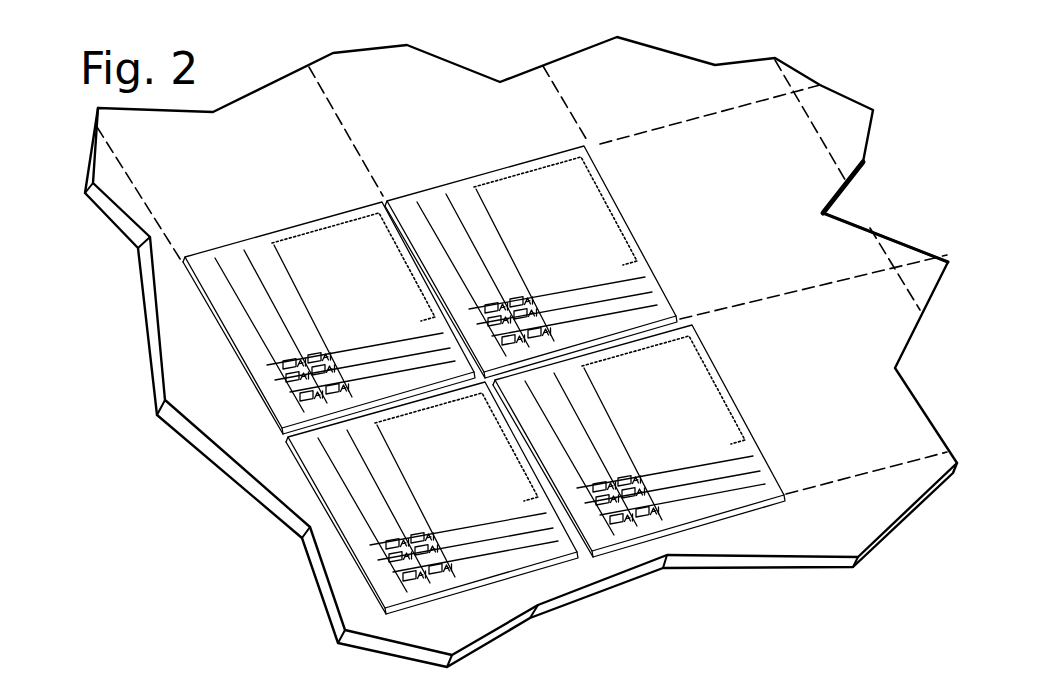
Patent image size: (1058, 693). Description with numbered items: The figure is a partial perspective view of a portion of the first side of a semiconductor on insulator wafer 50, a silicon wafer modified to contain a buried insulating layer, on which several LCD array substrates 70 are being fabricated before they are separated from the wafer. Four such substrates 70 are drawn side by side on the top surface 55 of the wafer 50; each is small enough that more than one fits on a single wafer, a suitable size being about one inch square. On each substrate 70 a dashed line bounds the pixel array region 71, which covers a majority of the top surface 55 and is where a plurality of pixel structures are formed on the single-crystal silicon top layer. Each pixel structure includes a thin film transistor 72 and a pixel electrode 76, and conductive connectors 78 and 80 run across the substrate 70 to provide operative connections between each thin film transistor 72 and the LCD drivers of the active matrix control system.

The semiconductor on insulator wafer 50 is at (825, 237).
The top surface 55 is at (811, 407).
The LCD array substrate 70 is at (280, 208).
The pixel array region 71 is at (612, 202).
The thin film transistor 72 is at (452, 557).
The pixel electrode 76 is at (407, 578).
The conductive connector 78 is at (438, 390).
The conductive connector 80 is at (516, 408).